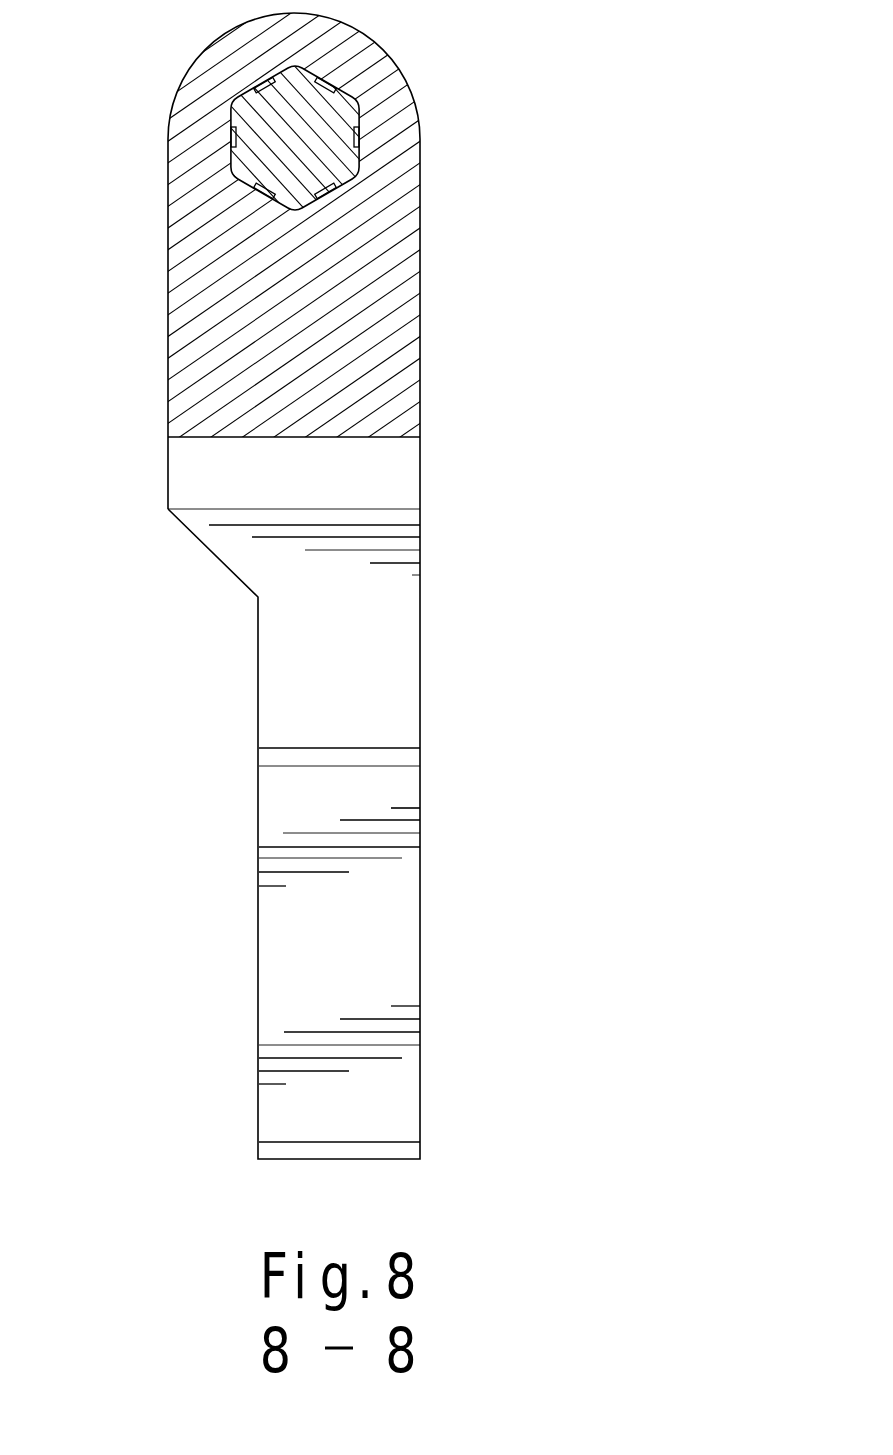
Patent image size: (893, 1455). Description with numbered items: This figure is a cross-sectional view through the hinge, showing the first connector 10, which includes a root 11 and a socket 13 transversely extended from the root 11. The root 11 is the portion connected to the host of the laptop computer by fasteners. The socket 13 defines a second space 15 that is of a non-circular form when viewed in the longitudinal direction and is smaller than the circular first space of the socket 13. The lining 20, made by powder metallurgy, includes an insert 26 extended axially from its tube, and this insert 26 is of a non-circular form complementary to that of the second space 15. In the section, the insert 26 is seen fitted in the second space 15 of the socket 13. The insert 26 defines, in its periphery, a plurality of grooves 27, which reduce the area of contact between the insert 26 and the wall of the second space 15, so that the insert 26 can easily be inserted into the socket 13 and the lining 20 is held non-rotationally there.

The socket 13 is at (272, 37).
The grooves 27 is at (228, 140).
The lining 20 is at (304, 195).
The second space 15 is at (361, 133).
The insert 26 is at (318, 167).
The first connector 10 is at (388, 650).
The root 11 is at (388, 920).